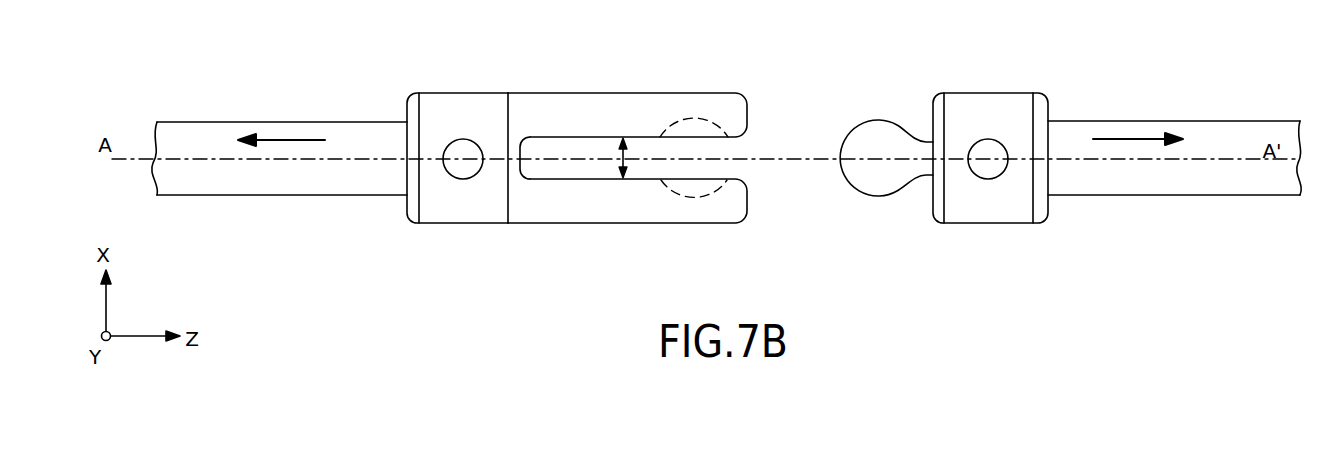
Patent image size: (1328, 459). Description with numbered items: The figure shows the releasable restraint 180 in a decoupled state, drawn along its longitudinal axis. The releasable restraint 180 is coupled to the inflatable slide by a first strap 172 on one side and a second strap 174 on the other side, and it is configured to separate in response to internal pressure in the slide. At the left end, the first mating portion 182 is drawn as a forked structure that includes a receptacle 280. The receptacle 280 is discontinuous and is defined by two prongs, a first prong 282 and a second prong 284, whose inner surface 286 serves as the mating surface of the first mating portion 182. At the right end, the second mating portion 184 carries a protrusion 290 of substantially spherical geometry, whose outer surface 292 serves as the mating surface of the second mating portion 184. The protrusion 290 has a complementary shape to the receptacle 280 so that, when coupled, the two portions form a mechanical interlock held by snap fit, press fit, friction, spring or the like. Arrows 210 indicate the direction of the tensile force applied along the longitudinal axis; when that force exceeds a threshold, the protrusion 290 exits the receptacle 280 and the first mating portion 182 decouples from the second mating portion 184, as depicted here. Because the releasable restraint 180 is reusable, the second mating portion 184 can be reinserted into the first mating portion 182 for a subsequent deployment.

The first strap 172 is at (197, 178).
The second strap 174 is at (1118, 185).
The releasable restraint 180 is at (1136, 311).
The first mating portion 182 is at (532, 108).
The second mating portion 184 is at (958, 215).
The arrows 210 is at (283, 140).
The receptacle 280 is at (712, 195).
The first prong 282 is at (627, 105).
The second prong 284 is at (625, 208).
The inner surface 286 is at (722, 135).
The protrusion 290 is at (876, 212).
The outer surface 292 is at (883, 118).